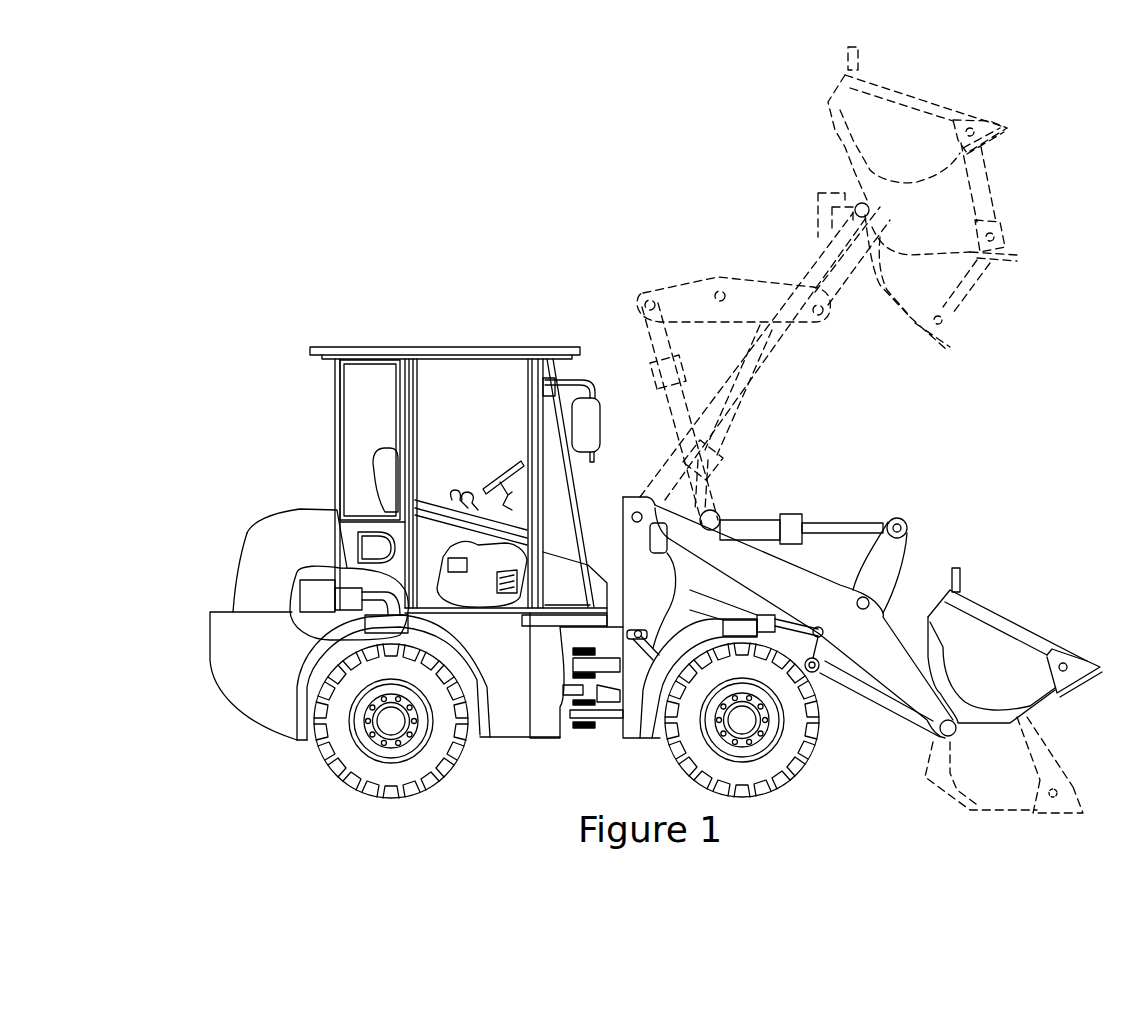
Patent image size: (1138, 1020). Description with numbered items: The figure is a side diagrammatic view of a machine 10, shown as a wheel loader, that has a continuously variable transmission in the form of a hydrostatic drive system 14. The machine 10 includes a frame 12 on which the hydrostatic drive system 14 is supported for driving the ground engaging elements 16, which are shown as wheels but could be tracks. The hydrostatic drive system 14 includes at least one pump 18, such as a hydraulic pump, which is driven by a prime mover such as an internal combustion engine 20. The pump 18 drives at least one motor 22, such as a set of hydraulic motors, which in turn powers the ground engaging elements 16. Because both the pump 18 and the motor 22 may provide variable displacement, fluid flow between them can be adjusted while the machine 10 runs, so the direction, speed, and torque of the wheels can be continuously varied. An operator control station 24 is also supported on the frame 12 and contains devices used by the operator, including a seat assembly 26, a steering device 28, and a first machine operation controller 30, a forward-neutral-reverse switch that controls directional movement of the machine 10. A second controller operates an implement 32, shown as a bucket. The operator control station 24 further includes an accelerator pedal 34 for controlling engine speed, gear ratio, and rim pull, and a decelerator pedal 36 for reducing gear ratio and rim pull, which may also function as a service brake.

The machine 10 is at (628, 182).
The frame 12 is at (516, 740).
The hydrostatic drive system 14 is at (331, 614).
The ground engaging elements 16 is at (346, 770).
The pump 18 is at (345, 585).
The internal combustion engine 20 is at (299, 596).
The motor 22 is at (378, 625).
The operator control station 24 is at (447, 346).
The seat assembly 26 is at (374, 447).
The steering device 28 is at (503, 472).
The first machine operation controller 30 is at (452, 490).
The implement 32 is at (1012, 620).
The accelerator pedal 34 is at (499, 607).
The decelerator pedal 36 is at (512, 600).